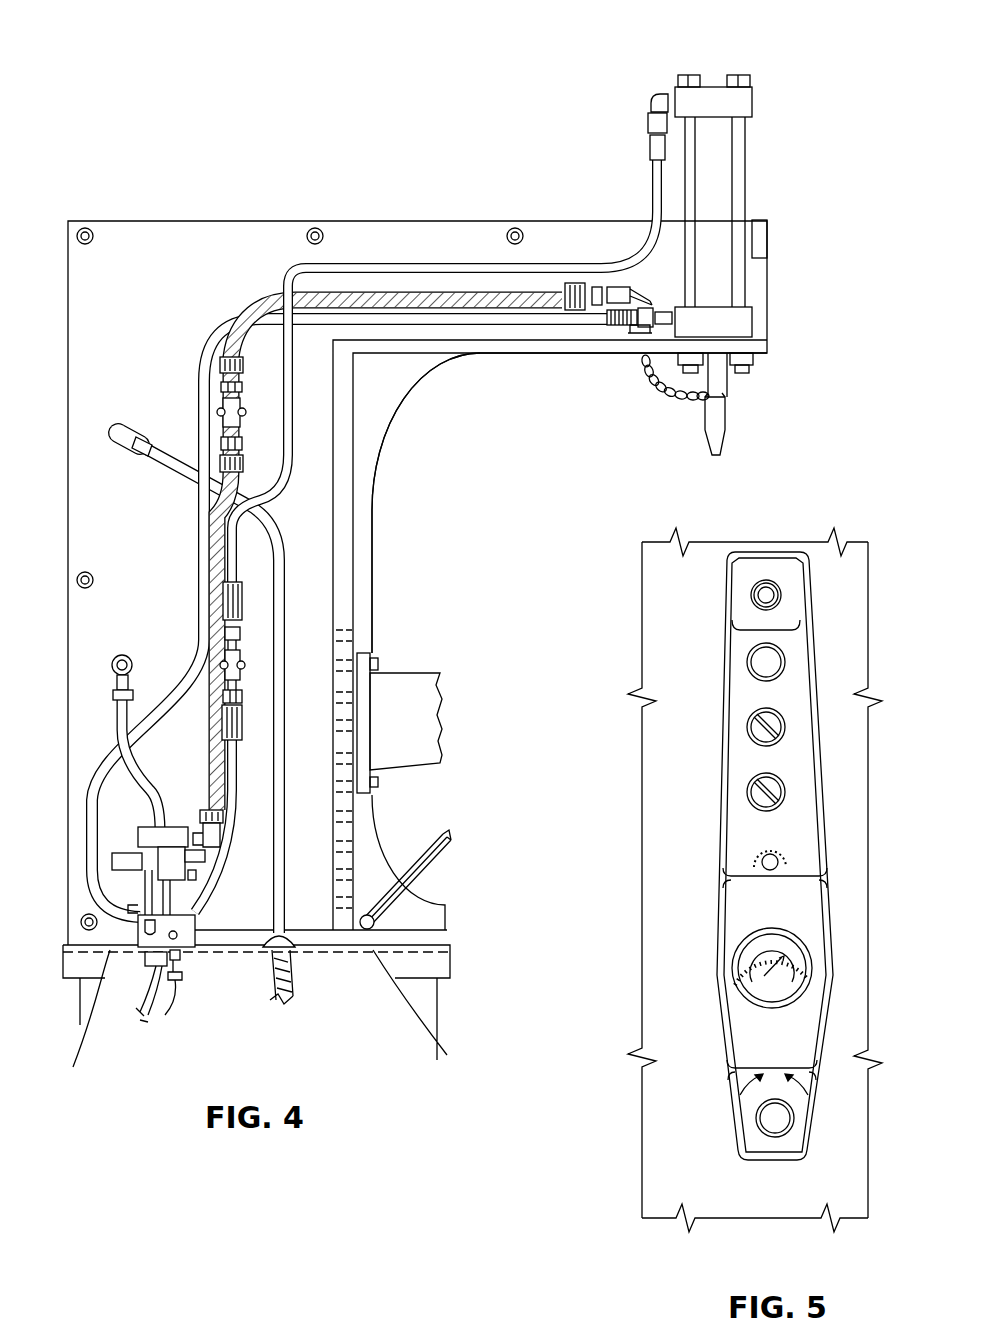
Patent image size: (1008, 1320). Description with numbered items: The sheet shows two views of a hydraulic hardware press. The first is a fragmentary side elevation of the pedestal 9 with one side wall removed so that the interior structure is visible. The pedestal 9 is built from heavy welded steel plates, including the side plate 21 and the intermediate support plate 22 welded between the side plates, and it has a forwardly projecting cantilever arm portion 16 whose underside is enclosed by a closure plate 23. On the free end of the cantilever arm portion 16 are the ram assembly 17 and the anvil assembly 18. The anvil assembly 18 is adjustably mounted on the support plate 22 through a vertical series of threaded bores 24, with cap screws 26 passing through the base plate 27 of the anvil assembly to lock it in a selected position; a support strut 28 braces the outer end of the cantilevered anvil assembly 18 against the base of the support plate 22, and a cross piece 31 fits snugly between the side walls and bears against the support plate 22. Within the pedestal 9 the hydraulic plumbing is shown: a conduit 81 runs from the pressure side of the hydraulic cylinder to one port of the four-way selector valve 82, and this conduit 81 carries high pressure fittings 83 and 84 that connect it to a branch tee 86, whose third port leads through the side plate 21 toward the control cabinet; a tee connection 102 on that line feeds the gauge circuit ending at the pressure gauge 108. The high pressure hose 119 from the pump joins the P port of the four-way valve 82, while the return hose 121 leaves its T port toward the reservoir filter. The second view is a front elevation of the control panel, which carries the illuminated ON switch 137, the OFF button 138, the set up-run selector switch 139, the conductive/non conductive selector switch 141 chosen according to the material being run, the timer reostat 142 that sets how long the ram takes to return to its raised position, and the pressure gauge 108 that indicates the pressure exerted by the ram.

In FIG. 4, the pedestal 9 is at (145, 215).
In FIG. 4, the cantilever arm portion 16 is at (457, 218).
In FIG. 4, the conduit 81 is at (562, 266).
In FIG. 4, the closure plate 23 is at (557, 350).
In FIG. 4, the ram assembly 17 is at (742, 394).
In FIG. 4, the intermediate support plate 22 is at (368, 483).
In FIG. 4, the side plate 21 is at (376, 562).
In FIG. 4, the anvil assembly 18 is at (412, 668).
In FIG. 4, the base plate 27 is at (366, 720).
In FIG. 4, the cap screws 26 is at (378, 783).
In FIG. 4, the threaded bores 24 is at (350, 812).
In FIG. 4, the support strut 28 is at (440, 862).
In FIG. 4, the cross piece 31 is at (378, 925).
In FIG. 4, the high pressure fitting 83 is at (226, 633).
In FIG. 4, the branch tee 86 is at (226, 668).
In FIG. 4, the high pressure fitting 84 is at (222, 700).
In FIG. 4, the four-way selector valve 82 is at (170, 840).
In FIG. 4, the high pressure hose 119 is at (178, 993).
In FIG. 4, the return hose 121 is at (150, 998).
In FIG. 5, the ON switch 137 is at (777, 598).
In FIG. 5, the OFF button 138 is at (777, 665).
In FIG. 5, the set up-run selector switch 139 is at (778, 732).
In FIG. 5, the conductive/non conductive selector switch 141 is at (785, 795).
In FIG. 5, the timer reostat 142 is at (778, 864).
In FIG. 5, the pressure gauge 108 is at (795, 970).
In FIG. 5, the tee connection 102 is at (785, 1122).